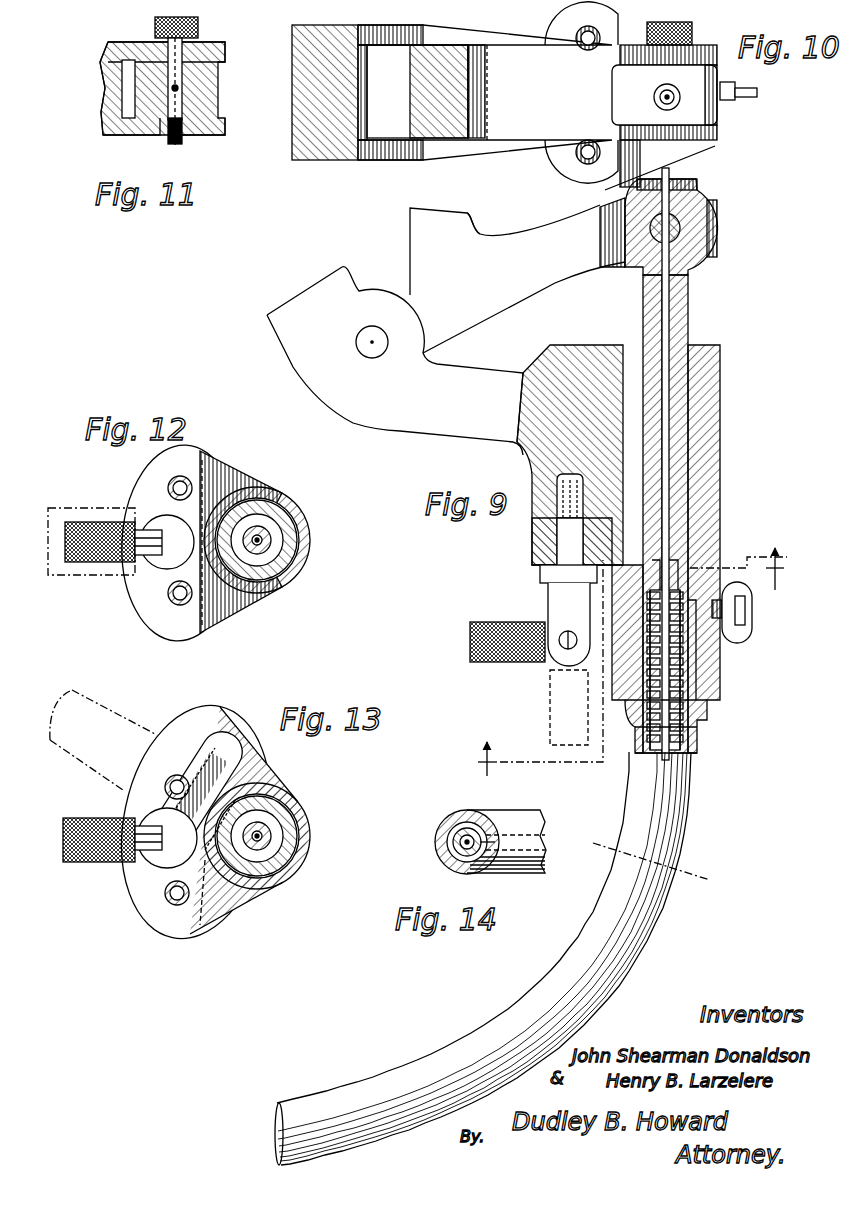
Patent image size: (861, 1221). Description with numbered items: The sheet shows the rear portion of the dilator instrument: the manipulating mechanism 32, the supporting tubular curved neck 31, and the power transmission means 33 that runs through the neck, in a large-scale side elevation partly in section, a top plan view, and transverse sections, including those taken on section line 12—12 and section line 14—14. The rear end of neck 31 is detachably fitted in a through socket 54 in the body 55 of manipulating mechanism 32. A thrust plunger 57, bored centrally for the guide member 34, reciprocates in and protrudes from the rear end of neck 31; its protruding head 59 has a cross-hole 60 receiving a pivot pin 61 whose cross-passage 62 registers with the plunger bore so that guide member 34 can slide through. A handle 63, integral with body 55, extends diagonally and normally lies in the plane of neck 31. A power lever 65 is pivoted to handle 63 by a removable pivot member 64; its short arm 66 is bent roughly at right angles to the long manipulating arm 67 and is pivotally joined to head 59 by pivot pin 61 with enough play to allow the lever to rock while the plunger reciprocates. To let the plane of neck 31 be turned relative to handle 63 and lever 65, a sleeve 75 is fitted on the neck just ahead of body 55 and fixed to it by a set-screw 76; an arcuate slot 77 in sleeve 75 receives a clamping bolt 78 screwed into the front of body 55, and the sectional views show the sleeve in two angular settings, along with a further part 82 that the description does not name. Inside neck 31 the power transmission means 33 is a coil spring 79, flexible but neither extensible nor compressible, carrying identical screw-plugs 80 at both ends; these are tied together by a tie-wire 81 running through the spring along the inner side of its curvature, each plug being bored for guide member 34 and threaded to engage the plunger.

In FIG. 9, the section line 12— 12 is at (631, 667).
In FIG. 9, the section line 14— 14 is at (651, 862).
In FIG. 9, the tubular curved neck 31 is at (478, 1034).
In FIG. 14, the tubular curved neck 31 is at (533, 810).
In FIG. 9, the manipulating mechanism 32 is at (472, 450).
In FIG. 9, the power transmission means 33 is at (738, 648).
In FIG. 14, the power transmission means 33 is at (495, 842).
In FIG. 11, the guide member 34 is at (182, 88).
In FIG. 10, the guide member 34 is at (652, 97).
In FIG. 9, the guide member 34 is at (670, 320).
In FIG. 12, the guide member 34 is at (262, 536).
In FIG. 13, the guide member 34 is at (262, 830).
In FIG. 14, the guide member 34 is at (456, 850).
In FIG. 9, the through socket 54 is at (700, 458).
In FIG. 10, the body 55 is at (720, 118).
In FIG. 9, the body 55 is at (724, 400).
In FIG. 11, the thrust plunger 57 is at (232, 66).
In FIG. 10, the thrust plunger 57 is at (736, 86).
In FIG. 9, the thrust plunger 57 is at (692, 340).
In FIG. 12, the thrust plunger 57 is at (294, 506).
In FIG. 13, the thrust plunger 57 is at (297, 806).
In FIG. 11, the head 59 is at (205, 137).
In FIG. 10, the head 59 is at (715, 142).
In FIG. 9, the head 59 is at (713, 248).
In FIG. 11, the cross-hole 60 is at (165, 138).
In FIG. 9, the cross-hole 60 is at (690, 222).
In FIG. 11, the pivot pin 61 is at (177, 146).
In FIG. 10, the pivot pin 61 is at (668, 150).
In FIG. 9, the pivot pin 61 is at (675, 222).
In FIG. 11, the cross-passage 62 is at (122, 136).
In FIG. 9, the cross-passage 62 is at (628, 274).
In FIG. 10, the handle 63 is at (320, 162).
In FIG. 9, the handle 63 is at (300, 345).
In FIG. 9, the removable pivot member 64 is at (365, 355).
In FIG. 11, the power lever 65 is at (100, 112).
In FIG. 10, the power lever 65 is at (445, 118).
In FIG. 9, the power lever 65 is at (476, 226).
In FIG. 11, the short arm 66 is at (118, 42).
In FIG. 10, the short arm 66 is at (463, 140).
In FIG. 9, the short arm 66 is at (540, 240).
In FIG. 9, the long manipulating arm 67 is at (412, 222).
In FIG. 9, the sleeve 75 is at (720, 688).
In FIG. 12, the sleeve 75 is at (302, 560).
In FIG. 13, the sleeve 75 is at (306, 862).
In FIG. 9, the set-screw 76 is at (754, 604).
In FIG. 9, the arcuate slot 77 is at (552, 550).
In FIG. 12, the arcuate slot 77 is at (165, 588).
In FIG. 13, the arcuate slot 77 is at (215, 745).
In FIG. 9, the clamping bolt 78 is at (548, 580).
In FIG. 12, the clamping bolt 78 is at (150, 562).
In FIG. 13, the clamping bolt 78 is at (140, 875).
In FIG. 9, the coil spring 79 is at (700, 738).
In FIG. 14, the coil spring 79 is at (470, 812).
In FIG. 9, the screw-plug 80 is at (692, 532).
In FIG. 12, the screw-plug 80 is at (265, 540).
In FIG. 13, the screw-plug 80 is at (265, 838).
In FIG. 9, the tie-wire 81 is at (642, 748).
In FIG. 14, the tie-wire 81 is at (448, 836).
In FIG. 12, the plate body 82 is at (268, 590).
In FIG. 13, the plate body 82 is at (280, 880).